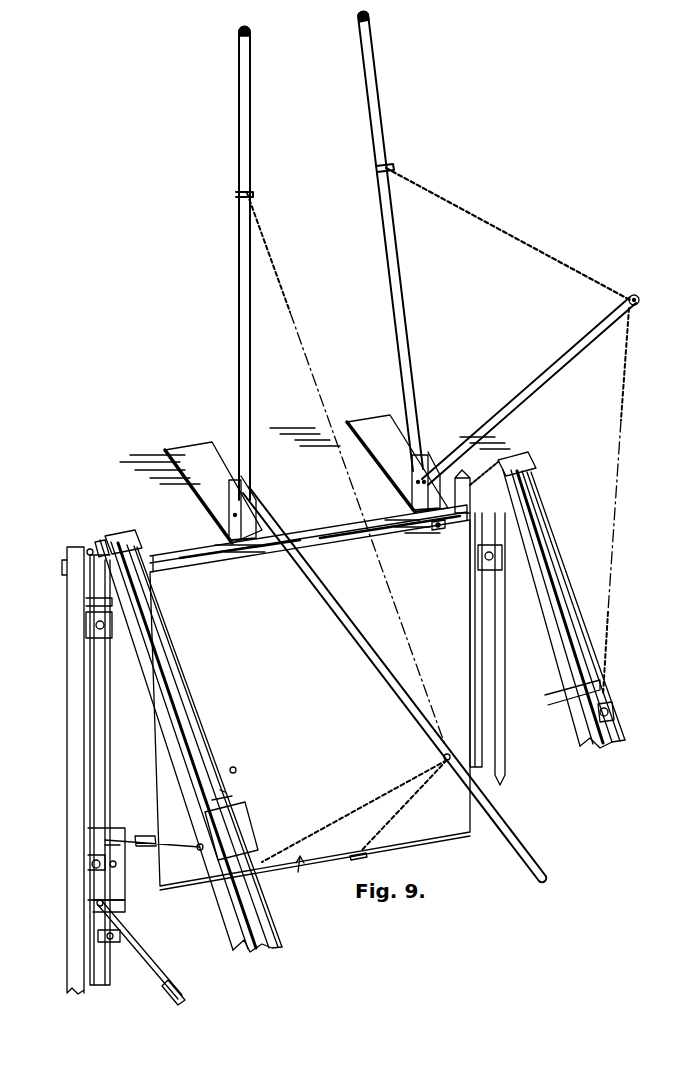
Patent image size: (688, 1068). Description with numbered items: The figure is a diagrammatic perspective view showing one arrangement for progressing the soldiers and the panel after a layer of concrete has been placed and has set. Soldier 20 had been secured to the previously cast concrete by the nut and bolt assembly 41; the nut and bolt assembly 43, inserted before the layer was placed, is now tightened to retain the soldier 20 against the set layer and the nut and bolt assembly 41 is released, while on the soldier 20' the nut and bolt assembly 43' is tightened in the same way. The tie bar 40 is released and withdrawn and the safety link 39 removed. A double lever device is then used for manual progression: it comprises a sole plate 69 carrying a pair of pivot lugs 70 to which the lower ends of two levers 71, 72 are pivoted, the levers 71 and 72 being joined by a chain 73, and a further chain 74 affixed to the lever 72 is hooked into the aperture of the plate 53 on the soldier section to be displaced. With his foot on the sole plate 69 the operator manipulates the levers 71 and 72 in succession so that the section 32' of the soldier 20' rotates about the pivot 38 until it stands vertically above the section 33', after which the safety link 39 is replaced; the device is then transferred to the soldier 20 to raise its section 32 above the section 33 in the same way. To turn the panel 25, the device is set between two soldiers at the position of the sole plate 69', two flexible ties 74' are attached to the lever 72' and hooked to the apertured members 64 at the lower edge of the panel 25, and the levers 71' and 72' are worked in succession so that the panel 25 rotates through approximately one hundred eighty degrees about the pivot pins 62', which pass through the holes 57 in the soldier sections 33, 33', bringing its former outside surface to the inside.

The soldier 20 is at (134, 909).
The soldier 20' is at (523, 649).
The panel 25 is at (297, 881).
The soldier section 32 is at (184, 741).
The soldier section 32' is at (564, 609).
The soldier section 33 is at (118, 770).
The soldier section 33' is at (454, 618).
The pivot 38 is at (530, 482).
The safety link 39 is at (153, 836).
The tie bar 40 is at (152, 955).
The nut and bolt assembly 41 is at (122, 938).
The nut and bolt assembly 43 is at (71, 624).
The nut and bolt assembly 43' is at (463, 571).
The apertured plate 53 is at (595, 712).
The hole 57 is at (82, 583).
The pivot pin 62' is at (429, 544).
The apertured member 64 is at (352, 860).
The sole plate 69 is at (397, 445).
The sole plate 69' is at (213, 473).
The pivot lug 70 is at (445, 470).
The lever 71 is at (390, 241).
The lever 71' is at (264, 264).
The lever 72 is at (530, 390).
The lever 72' is at (401, 684).
The chain 73 is at (493, 230).
The chain 74 is at (598, 501).
The flexible tie 74' is at (356, 808).